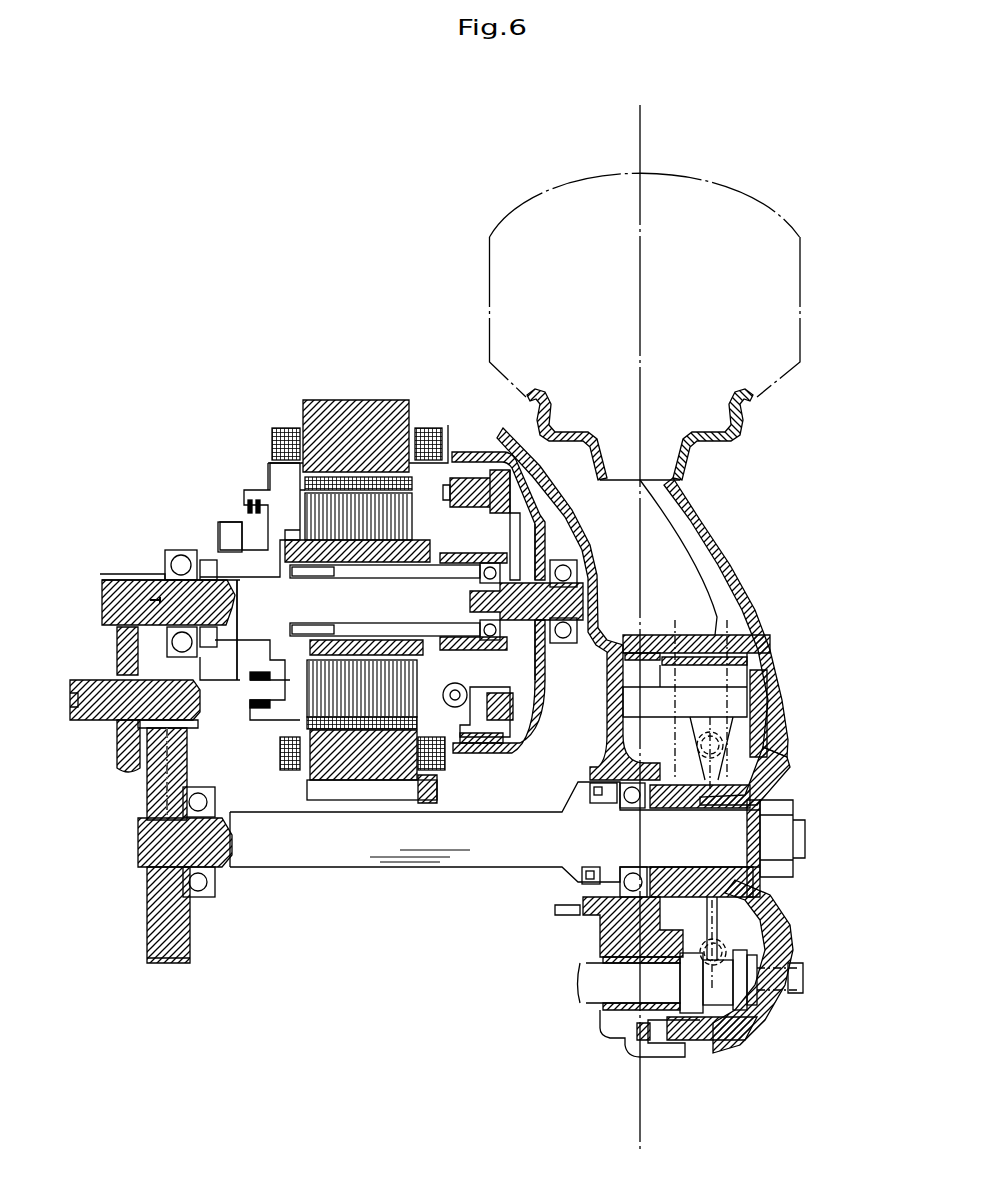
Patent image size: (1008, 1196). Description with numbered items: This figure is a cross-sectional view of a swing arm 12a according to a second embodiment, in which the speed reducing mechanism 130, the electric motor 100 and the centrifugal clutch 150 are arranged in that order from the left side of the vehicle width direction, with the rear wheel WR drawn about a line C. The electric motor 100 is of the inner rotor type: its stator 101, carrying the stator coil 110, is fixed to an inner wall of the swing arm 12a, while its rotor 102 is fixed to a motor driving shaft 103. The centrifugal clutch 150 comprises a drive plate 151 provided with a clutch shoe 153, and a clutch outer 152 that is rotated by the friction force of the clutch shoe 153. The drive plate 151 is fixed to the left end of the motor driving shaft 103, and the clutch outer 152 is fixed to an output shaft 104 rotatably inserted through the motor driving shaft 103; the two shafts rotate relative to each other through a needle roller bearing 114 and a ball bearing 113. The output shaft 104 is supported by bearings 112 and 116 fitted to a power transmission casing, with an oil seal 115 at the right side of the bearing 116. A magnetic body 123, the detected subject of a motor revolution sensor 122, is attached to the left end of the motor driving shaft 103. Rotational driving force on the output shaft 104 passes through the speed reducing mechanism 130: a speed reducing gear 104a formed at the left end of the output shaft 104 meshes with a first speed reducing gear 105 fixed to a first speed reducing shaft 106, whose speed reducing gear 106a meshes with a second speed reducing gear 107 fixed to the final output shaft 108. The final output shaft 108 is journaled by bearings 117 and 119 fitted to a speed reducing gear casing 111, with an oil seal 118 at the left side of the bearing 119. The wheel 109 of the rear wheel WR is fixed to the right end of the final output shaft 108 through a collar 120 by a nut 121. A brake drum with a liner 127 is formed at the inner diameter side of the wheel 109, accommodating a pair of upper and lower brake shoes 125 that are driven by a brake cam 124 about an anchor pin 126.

The swing arm 12a is at (100, 472).
The electric motor 100 is at (330, 582).
The stator 101 is at (350, 425).
The rotor 102 is at (337, 517).
The motor driving shaft 103 is at (303, 727).
The output shaft 104 is at (130, 595).
The speed reducing gear 104a is at (146, 578).
The first speed reducing gear 105 is at (120, 755).
The first speed reducing shaft 106 is at (95, 683).
The speed reducing gear 106a is at (115, 652).
The second speed reducing gear 107 is at (160, 903).
The final output shaft 108 is at (340, 860).
The wheel 109 is at (777, 687).
The stator coil 110 is at (275, 445).
The speed reducing gear casing 111 is at (610, 940).
The bearing 112 is at (563, 643).
The ball bearing 113 is at (488, 565).
The needle roller bearing 114 is at (313, 633).
The oil seal 115 is at (217, 570).
The bearing 116 is at (181, 558).
The bearing 117 is at (200, 890).
The oil seal 118 is at (582, 790).
The bearing 119 is at (633, 887).
The collar 120 is at (757, 775).
The nut 121 is at (770, 870).
The motor revolution sensor 122 is at (210, 608).
The magnetic body 123 is at (240, 717).
The brake cam 124 is at (630, 1013).
The brake shoes 125 is at (740, 937).
The anchor pin 126 is at (705, 697).
The liner 127 is at (763, 990).
The speed reducing mechanism 130 is at (125, 948).
The centrifugal clutch 150 is at (490, 427).
The drive plate 151 is at (540, 520).
The clutch outer 152 is at (545, 545).
The clutch shoe 153 is at (487, 747).
The wheel center line C is at (640, 136).
The rear wheel WR is at (800, 283).